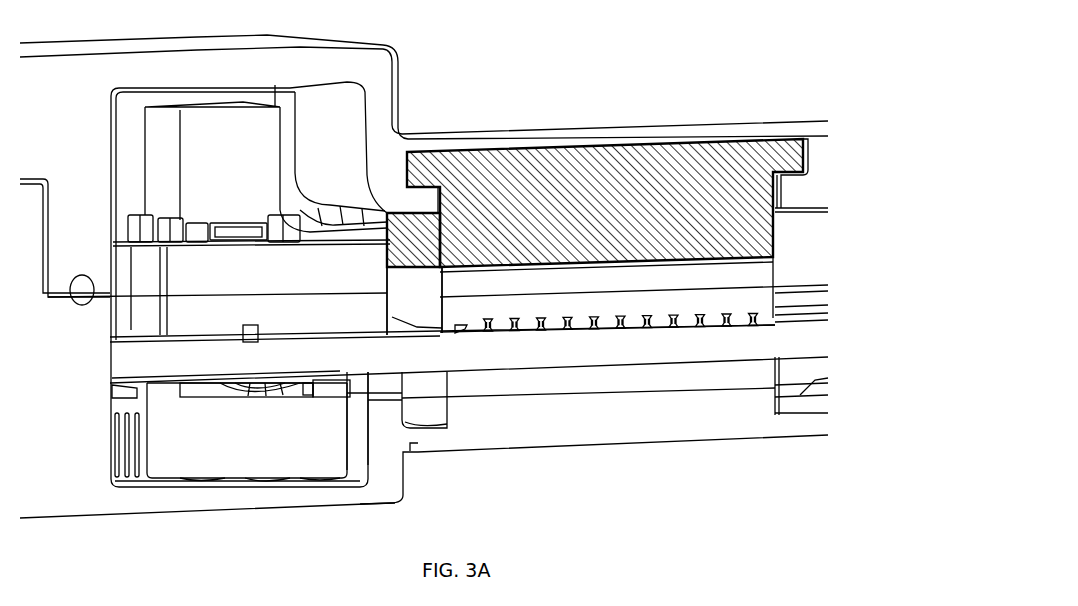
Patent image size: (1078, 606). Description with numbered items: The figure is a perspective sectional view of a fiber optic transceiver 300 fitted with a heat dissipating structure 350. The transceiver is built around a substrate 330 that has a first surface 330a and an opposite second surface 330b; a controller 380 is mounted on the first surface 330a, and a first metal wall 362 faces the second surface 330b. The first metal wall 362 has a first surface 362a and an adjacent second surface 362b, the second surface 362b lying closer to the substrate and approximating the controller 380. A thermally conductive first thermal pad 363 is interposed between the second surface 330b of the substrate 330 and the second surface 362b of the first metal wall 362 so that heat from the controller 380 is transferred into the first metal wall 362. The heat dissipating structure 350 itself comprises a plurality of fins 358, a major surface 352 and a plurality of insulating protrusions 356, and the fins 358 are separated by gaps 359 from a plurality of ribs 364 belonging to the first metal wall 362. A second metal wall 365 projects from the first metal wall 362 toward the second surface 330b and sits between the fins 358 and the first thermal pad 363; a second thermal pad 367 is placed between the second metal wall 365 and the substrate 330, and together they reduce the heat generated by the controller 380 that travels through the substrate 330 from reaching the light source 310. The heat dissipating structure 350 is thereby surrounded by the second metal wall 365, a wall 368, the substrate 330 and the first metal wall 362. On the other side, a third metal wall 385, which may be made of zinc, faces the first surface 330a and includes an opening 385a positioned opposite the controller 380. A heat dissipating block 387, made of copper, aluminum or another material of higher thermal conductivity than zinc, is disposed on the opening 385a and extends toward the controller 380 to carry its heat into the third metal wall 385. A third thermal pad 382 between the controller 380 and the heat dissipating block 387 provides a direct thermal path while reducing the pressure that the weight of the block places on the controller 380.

The fiber optic transceiver 300 is at (113, 36).
The light source 310 is at (267, 325).
The substrate 330 is at (383, 363).
The first surface of the substrate 330a is at (757, 327).
The second surface of the substrate 330b is at (200, 383).
The heat dissipating structure 350 is at (246, 445).
The major surface 352 is at (200, 393).
The insulating protrusions 356 is at (327, 392).
The fins 358 is at (115, 435).
The gaps 359 is at (294, 486).
The first metal wall 362 is at (424, 480).
The first surface of the first metal wall 362a is at (383, 504).
The second surface of the first metal wall 362b is at (493, 403).
The first thermal pad 363 is at (542, 390).
The ribs 364 is at (175, 492).
The second metal wall 365 is at (392, 412).
The second thermal pad 367 is at (370, 385).
The wall 368 is at (110, 400).
The controller 380 is at (630, 312).
The third thermal pad 382 is at (702, 270).
The third metal wall 385 is at (781, 197).
The opening 385a is at (435, 190).
The heat dissipating block 387 is at (497, 160).